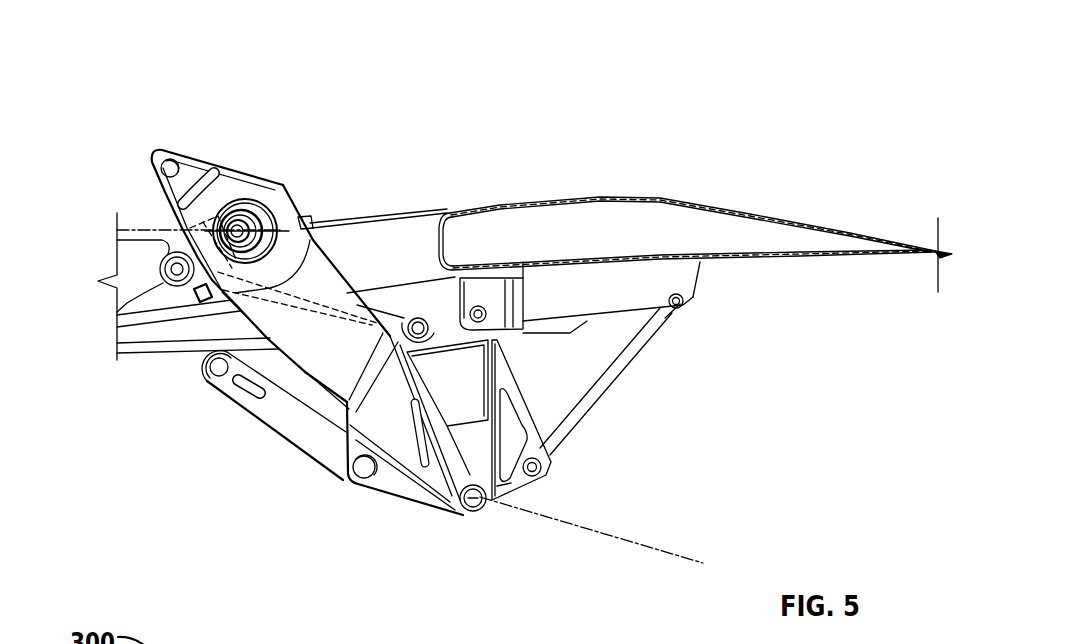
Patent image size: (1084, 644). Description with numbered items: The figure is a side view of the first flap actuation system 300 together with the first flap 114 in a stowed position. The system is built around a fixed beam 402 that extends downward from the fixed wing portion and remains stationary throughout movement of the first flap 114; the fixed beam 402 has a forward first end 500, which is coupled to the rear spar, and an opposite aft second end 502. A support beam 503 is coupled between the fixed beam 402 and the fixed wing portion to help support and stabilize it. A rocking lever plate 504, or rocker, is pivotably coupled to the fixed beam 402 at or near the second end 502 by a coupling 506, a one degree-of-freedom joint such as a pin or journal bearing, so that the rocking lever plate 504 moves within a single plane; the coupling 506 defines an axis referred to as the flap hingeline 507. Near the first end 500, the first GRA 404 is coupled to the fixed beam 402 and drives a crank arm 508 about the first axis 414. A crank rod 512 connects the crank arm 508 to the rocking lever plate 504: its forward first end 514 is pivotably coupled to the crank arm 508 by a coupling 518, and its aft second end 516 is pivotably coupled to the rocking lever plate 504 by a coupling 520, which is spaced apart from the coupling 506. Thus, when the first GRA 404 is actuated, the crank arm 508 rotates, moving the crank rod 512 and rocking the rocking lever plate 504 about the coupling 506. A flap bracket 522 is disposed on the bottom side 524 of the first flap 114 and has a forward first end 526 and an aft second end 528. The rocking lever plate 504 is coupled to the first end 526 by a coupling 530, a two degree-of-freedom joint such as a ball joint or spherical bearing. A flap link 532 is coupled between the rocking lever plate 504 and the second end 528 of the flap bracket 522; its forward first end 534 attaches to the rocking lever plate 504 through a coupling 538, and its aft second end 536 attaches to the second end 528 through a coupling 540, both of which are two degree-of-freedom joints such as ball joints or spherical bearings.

The first flap actuation system 300 is at (138, 40).
The first flap 114 is at (678, 237).
The fixed beam 402 is at (320, 274).
The first GRA 404 is at (241, 200).
The first axis 414 is at (137, 227).
The first end of the fixed beam 500 is at (155, 152).
The second end of the fixed beam 502 is at (473, 512).
The support beam 503 is at (282, 415).
The rocking lever plate 504 is at (443, 272).
The coupling 506 is at (430, 505).
The flap hingeline 507 is at (657, 550).
The crank arm 508 is at (128, 230).
The crank rod 512 is at (197, 301).
The first end of the crank rod 514 is at (117, 322).
The second end of the crank rod 516 is at (450, 382).
The coupling 518 is at (160, 268).
The coupling 520 is at (418, 319).
The flap bracket 522 is at (627, 287).
The bottom side of the first flap 524 is at (793, 258).
The first end of the flap bracket 526 is at (488, 310).
The second end of the flap bracket 528 is at (704, 268).
The coupling 530 is at (547, 278).
The flap link 532 is at (587, 400).
The first end of the flap link 534 is at (552, 457).
The second end of the flap link 536 is at (662, 330).
The coupling 538 is at (505, 492).
The coupling 540 is at (684, 302).